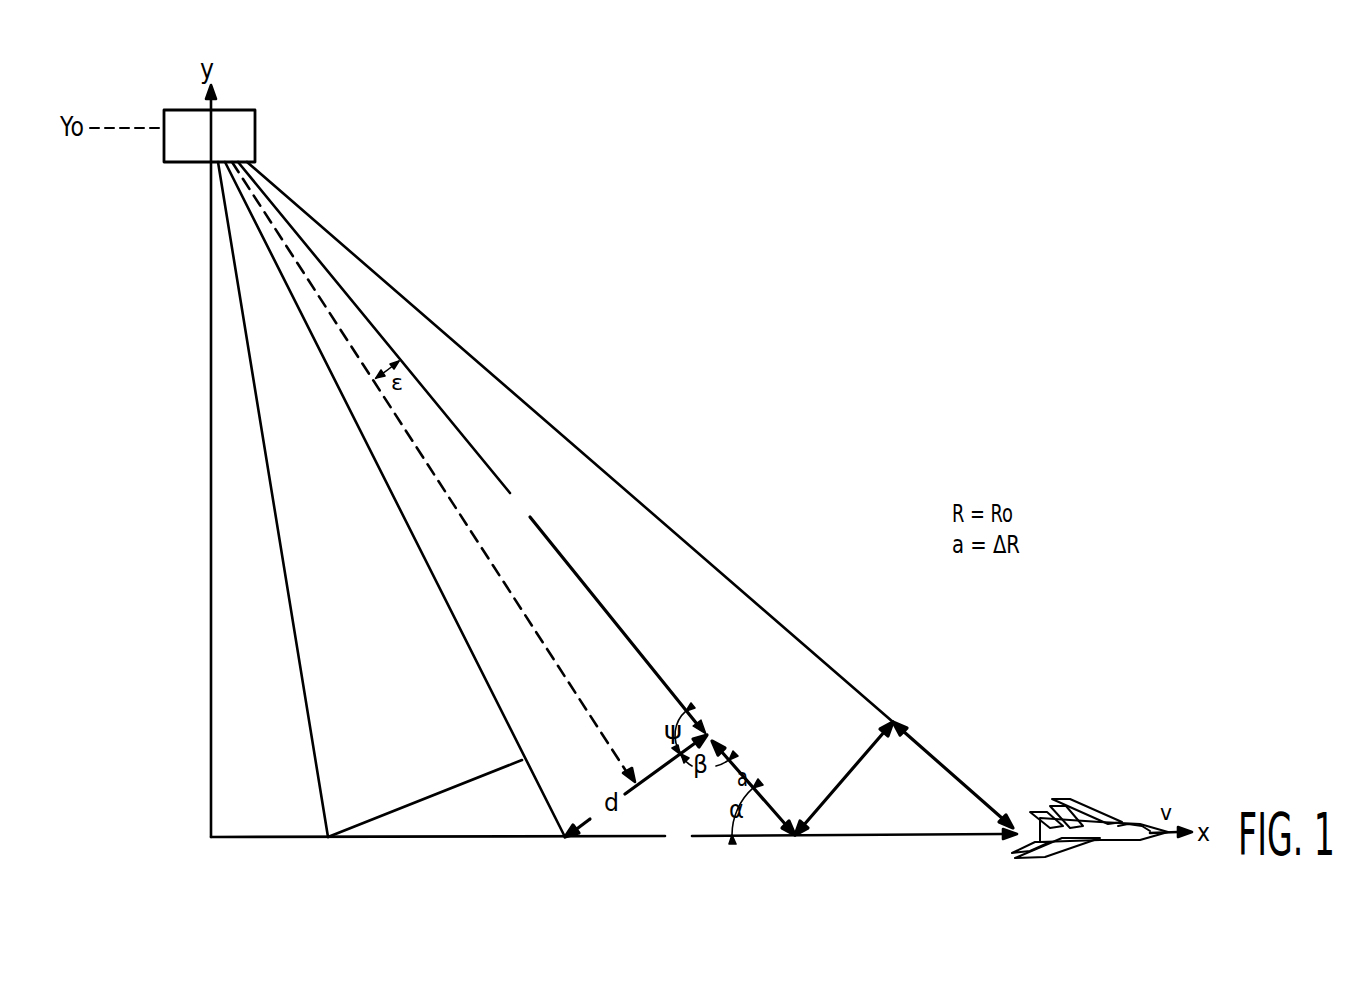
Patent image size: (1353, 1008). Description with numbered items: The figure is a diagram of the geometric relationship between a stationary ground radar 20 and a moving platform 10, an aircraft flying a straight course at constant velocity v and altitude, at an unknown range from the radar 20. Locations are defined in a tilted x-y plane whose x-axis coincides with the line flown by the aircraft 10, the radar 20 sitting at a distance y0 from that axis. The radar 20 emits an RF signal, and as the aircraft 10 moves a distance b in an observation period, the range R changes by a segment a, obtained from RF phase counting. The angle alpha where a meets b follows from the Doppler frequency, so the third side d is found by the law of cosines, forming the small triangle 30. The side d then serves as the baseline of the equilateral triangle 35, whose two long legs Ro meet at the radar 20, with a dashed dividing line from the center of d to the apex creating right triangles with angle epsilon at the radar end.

The moving platform 10 is at (1082, 812).
The stationary radar 20 is at (164, 148).
The small triangle 30 is at (667, 805).
The equilateral triangle 35 is at (598, 662).